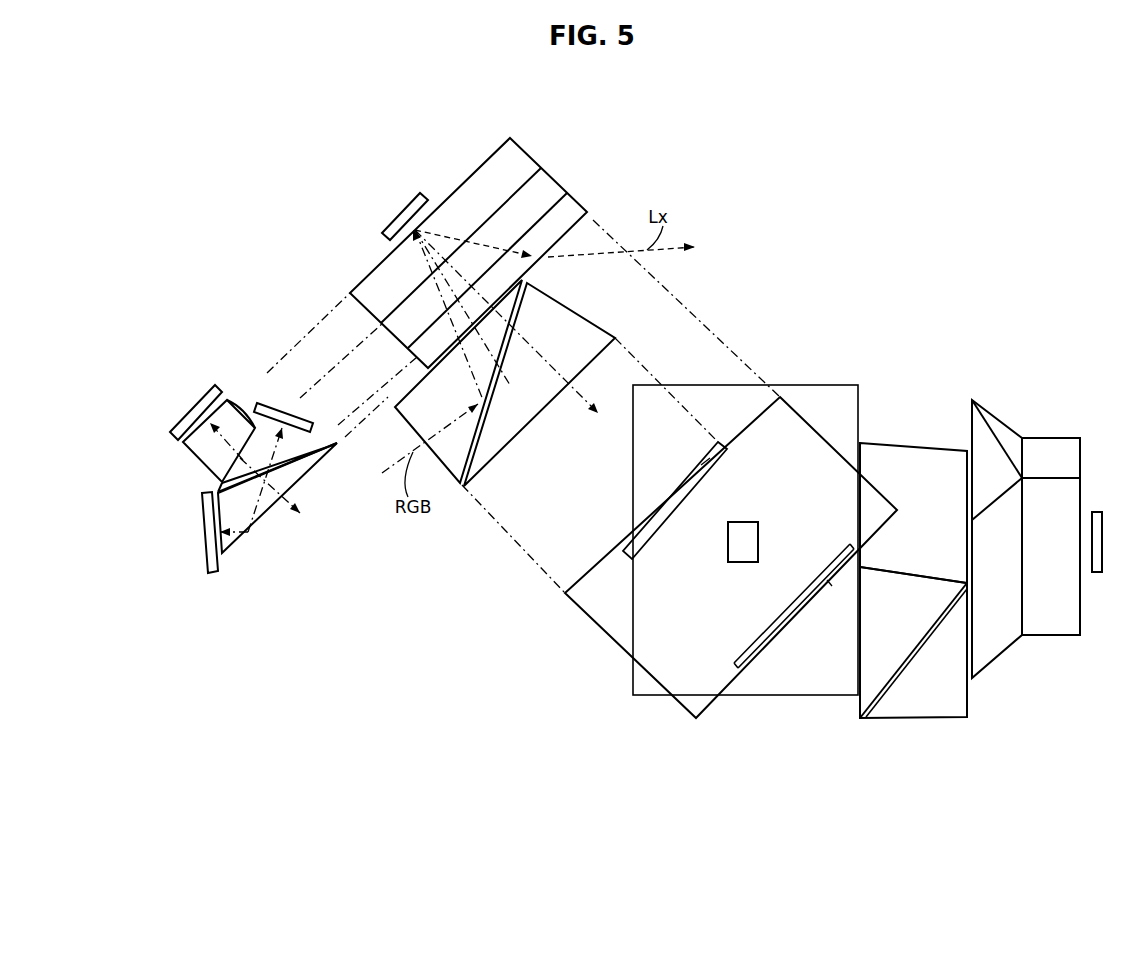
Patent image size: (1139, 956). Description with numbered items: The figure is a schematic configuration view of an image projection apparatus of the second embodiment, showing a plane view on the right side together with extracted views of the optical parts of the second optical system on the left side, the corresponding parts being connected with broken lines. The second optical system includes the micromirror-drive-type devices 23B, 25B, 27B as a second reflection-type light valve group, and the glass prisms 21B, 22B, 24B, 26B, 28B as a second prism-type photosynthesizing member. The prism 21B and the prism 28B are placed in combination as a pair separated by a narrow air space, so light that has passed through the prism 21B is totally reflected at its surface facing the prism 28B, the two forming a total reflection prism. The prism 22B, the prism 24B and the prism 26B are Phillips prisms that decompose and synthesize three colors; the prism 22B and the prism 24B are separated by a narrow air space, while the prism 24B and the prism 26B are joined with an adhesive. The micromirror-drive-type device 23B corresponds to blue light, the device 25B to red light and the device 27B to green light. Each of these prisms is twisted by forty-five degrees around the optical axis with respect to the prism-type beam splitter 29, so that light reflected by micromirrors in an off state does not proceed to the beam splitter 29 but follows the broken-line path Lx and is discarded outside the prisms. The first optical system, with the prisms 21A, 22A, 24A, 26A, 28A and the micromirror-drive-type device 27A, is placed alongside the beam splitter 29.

The prism 21A is at (913, 718).
The prism 21B is at (462, 484).
The prism 22A is at (997, 657).
The prism 22B is at (587, 207).
The micromirror-drive-type device 23B is at (205, 537).
The prism 24A is at (1010, 425).
The prism 24B is at (557, 180).
The micromirror-drive-type device 25B is at (267, 405).
The prism 26A is at (1053, 637).
The prism 26B is at (372, 270).
The micromirror-drive-type device 27A is at (1097, 572).
The micromirror-drive-type device 27B is at (407, 216).
The prism 28A is at (913, 445).
The prism 28B is at (595, 323).
The prism-type beam splitter 29 is at (833, 385).